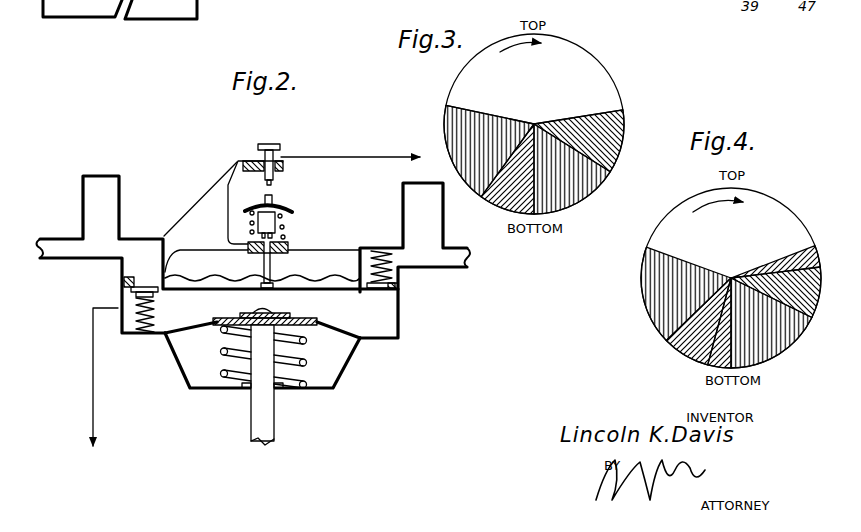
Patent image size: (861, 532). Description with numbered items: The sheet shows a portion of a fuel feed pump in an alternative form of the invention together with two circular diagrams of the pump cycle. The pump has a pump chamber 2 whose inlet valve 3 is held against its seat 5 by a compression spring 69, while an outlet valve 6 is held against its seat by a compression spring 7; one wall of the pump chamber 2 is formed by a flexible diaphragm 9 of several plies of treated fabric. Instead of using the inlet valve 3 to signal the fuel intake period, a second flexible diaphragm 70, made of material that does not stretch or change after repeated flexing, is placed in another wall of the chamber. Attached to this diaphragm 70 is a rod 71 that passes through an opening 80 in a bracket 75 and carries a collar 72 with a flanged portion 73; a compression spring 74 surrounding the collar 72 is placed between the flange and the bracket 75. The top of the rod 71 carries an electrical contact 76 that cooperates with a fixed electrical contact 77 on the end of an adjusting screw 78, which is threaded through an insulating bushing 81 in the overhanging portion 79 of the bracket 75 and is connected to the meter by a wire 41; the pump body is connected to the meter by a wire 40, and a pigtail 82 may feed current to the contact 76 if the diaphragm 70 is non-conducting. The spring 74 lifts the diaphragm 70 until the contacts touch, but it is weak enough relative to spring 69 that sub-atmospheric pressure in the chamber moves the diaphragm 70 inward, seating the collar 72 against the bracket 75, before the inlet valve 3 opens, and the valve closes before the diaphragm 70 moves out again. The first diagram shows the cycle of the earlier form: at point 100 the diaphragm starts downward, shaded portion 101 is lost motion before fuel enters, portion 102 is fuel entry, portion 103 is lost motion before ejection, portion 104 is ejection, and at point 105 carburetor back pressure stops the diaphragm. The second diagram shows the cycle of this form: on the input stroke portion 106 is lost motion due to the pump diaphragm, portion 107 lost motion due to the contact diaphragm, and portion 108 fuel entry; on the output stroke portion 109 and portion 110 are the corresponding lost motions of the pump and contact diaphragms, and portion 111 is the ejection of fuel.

In FIG. 2, the pump chamber 2 is at (380, 315).
In FIG. 2, the inlet valve 3 is at (131, 292).
In FIG. 2, the seat 5 is at (128, 282).
In FIG. 2, the outlet valve 6 is at (400, 286).
In FIG. 2, the compression spring 7 is at (378, 250).
In FIG. 2, the flexible diaphragm 9 is at (200, 330).
In FIG. 2, the wire 40 is at (92, 396).
In FIG. 2, the wire 41 is at (361, 153).
In FIG. 2, the compression spring 69 is at (137, 312).
In FIG. 2, the second flexible diaphragm 70 is at (302, 284).
In FIG. 2, the rod 71 is at (264, 265).
In FIG. 2, the collar 72 is at (276, 226).
In FIG. 2, the flanged portion 73 is at (292, 211).
In FIG. 2, the compression spring 74 is at (284, 236).
In FIG. 2, the bracket 75 is at (213, 193).
In FIG. 2, the electrical contact 76 is at (272, 198).
In FIG. 2, the fixed electrical contact 77 is at (272, 183).
In FIG. 2, the adjusting screw 78 is at (282, 146).
In FIG. 2, the overhanging portion 79 is at (243, 162).
In FIG. 2, the opening 80 is at (248, 249).
In FIG. 2, the insulating bushing 81 is at (254, 160).
In FIG. 2, the pigtail 82 is at (210, 282).
In FIG. 3, the point 100 is at (623, 110).
In FIG. 3, the shaded portion 101 is at (607, 133).
In FIG. 3, the portion 102 is at (570, 187).
In FIG. 3, the portion 103 is at (510, 188).
In FIG. 3, the portion 104 is at (480, 142).
In FIG. 3, the point 105 is at (446, 105).
In FIG. 4, the portion 106 is at (798, 248).
In FIG. 4, the portion 107 is at (813, 312).
In FIG. 4, the portion 108 is at (767, 343).
In FIG. 4, the sector 109 is at (707, 355).
In FIG. 4, the portion 110 is at (665, 338).
In FIG. 4, the portion 111 is at (663, 283).